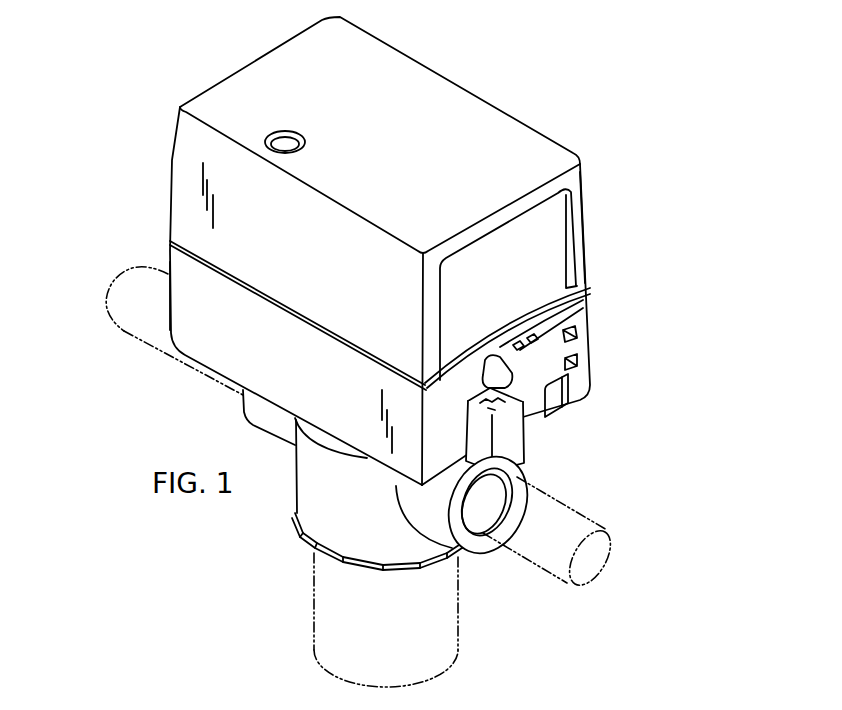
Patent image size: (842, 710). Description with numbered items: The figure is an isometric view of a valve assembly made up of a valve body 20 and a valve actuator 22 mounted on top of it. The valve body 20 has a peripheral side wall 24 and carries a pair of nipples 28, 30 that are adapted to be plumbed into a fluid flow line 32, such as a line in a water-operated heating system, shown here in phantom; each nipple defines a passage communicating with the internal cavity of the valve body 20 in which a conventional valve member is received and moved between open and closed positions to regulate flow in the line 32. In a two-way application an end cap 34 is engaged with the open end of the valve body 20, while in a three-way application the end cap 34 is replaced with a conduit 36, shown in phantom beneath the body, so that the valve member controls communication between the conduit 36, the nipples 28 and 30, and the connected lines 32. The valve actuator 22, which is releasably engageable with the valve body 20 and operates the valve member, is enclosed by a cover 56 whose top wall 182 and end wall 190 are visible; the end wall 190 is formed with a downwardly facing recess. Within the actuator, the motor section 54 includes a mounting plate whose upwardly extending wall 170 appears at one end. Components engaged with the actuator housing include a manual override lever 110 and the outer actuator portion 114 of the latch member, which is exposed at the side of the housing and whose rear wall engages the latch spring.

The valve body 20 is at (274, 511).
The valve actuator 22 is at (538, 80).
The peripheral side wall 24 is at (320, 507).
The nipple 28 is at (257, 413).
The nipple 30 is at (524, 463).
The fluid flow line 32 is at (587, 517).
The end cap 34 is at (331, 568).
The conduit 36 is at (462, 621).
The motor section 54 is at (158, 297).
The cover 56 is at (150, 170).
The manual override lever 110 is at (516, 366).
The outer actuator portion 114 is at (531, 437).
The upwardly extending wall 170 is at (553, 232).
The top wall 182 is at (423, 113).
The end wall 190 is at (537, 197).